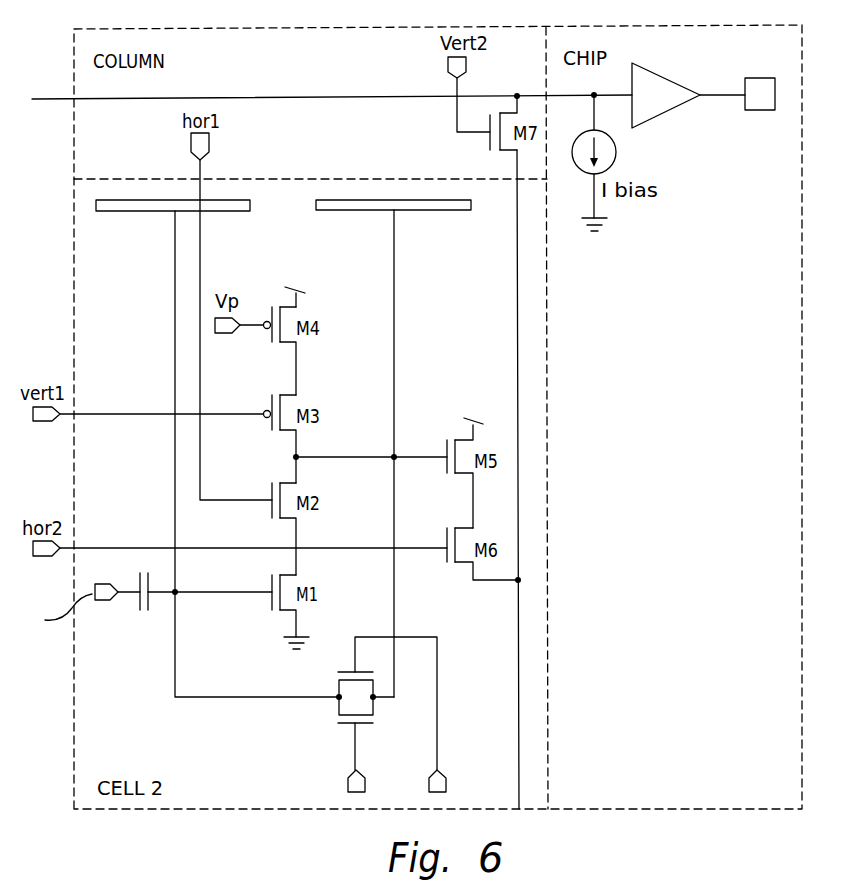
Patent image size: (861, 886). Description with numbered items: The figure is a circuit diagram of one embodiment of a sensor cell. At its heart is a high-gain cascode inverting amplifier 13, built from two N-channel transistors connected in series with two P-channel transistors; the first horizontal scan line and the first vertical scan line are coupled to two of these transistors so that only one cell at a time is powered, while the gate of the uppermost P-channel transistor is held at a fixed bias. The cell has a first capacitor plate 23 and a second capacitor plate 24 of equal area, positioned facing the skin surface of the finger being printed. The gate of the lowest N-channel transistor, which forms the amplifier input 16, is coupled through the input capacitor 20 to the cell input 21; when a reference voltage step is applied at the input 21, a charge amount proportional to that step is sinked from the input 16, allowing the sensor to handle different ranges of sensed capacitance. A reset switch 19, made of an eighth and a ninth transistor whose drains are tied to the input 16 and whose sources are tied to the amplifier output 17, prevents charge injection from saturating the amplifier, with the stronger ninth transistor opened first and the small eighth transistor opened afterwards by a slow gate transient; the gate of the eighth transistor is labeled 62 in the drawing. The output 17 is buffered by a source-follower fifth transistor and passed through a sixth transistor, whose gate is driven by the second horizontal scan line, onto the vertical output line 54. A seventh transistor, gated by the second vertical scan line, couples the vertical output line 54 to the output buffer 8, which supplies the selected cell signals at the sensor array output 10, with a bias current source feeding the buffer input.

The buffer 8 is at (672, 77).
The output 10 is at (755, 78).
The inverting amplifier 13 is at (297, 272).
The output 17 is at (299, 455).
The vertical output line 54 is at (517, 286).
The second capacitor plate 24 is at (128, 212).
The first capacitor plate 23 is at (370, 210).
The input 16 is at (177, 594).
The input capacitor 20 is at (152, 599).
The input 21 is at (107, 601).
The reset switch 19 is at (339, 697).
The gate of transistor M8 62 is at (347, 672).